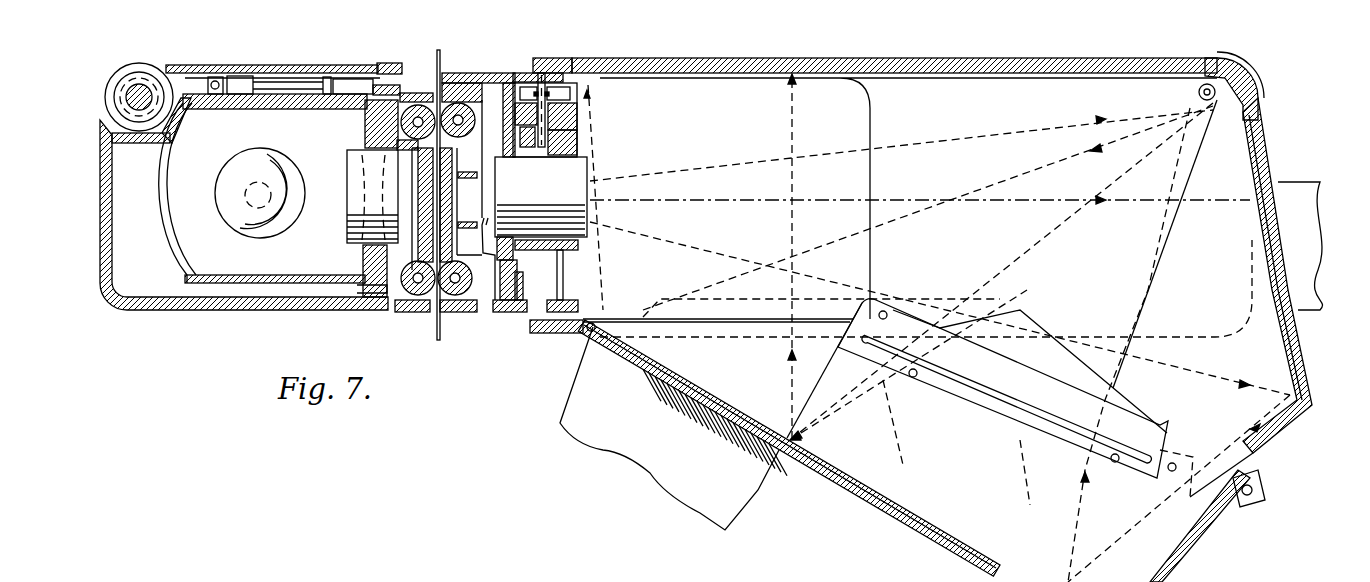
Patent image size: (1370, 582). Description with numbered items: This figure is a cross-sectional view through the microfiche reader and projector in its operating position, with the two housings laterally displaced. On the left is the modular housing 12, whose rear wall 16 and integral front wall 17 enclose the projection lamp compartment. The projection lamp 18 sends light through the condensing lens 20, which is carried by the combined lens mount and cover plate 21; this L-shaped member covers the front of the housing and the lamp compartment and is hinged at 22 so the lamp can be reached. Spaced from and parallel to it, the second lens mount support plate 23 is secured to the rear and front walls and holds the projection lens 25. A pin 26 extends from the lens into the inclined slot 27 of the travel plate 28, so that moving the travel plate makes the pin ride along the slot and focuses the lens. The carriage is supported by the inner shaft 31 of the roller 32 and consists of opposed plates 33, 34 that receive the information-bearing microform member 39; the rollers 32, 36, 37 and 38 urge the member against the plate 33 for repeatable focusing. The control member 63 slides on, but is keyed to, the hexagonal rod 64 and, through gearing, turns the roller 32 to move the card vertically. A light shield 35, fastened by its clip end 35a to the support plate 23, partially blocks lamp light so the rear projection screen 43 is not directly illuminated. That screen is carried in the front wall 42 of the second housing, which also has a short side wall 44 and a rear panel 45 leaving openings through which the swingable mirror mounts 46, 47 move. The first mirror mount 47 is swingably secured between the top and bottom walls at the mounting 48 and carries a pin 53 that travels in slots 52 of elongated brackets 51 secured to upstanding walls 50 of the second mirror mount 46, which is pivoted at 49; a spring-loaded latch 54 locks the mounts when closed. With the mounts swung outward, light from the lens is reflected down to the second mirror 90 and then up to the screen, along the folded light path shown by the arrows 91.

The modular housing 12 is at (102, 298).
The rear wall 16 is at (248, 310).
The front wall 17 is at (400, 66).
The projection lamp 18 is at (240, 215).
The condensing lens 20 is at (352, 164).
The combined lens mount and cover plate 21 is at (365, 122).
The hinge 22 is at (370, 297).
The second lens mount support plate 23 is at (509, 78).
The projection lens 25 is at (572, 200).
The pin 26 is at (580, 133).
The slot 27 is at (572, 96).
The travel plate 28 is at (575, 104).
The inner shaft 31 is at (418, 108).
The roller 32 is at (432, 112).
The plate 33 is at (455, 194).
The plate 34 is at (380, 193).
The light shield 35 is at (490, 300).
The clip end 35a is at (521, 300).
The roller 36 is at (461, 104).
The roller 37 is at (413, 294).
The roller 38 is at (457, 295).
The information-bearing microform member 39 is at (440, 55).
The front wall 42 is at (1228, 43).
The rear projection screen 43 is at (885, 36).
The short side wall 44 is at (1262, 88).
The panel 45 is at (558, 334).
The second swingable mirror mount 46 is at (838, 482).
The first mirror mount 47 is at (1256, 180).
The hinge pin 48 is at (1203, 85).
The pivot 49 is at (592, 332).
The upstanding walls 50 is at (1188, 523).
The elongated brackets 51 is at (1015, 420).
The slots 52 is at (958, 378).
The pin 53 is at (1158, 476).
The spring-loaded latch 54 is at (1272, 487).
The control member 63 is at (125, 66).
The hexagonal rod 64 is at (140, 90).
The second mirror 90 is at (935, 484).
The arrows 91 is at (795, 108).